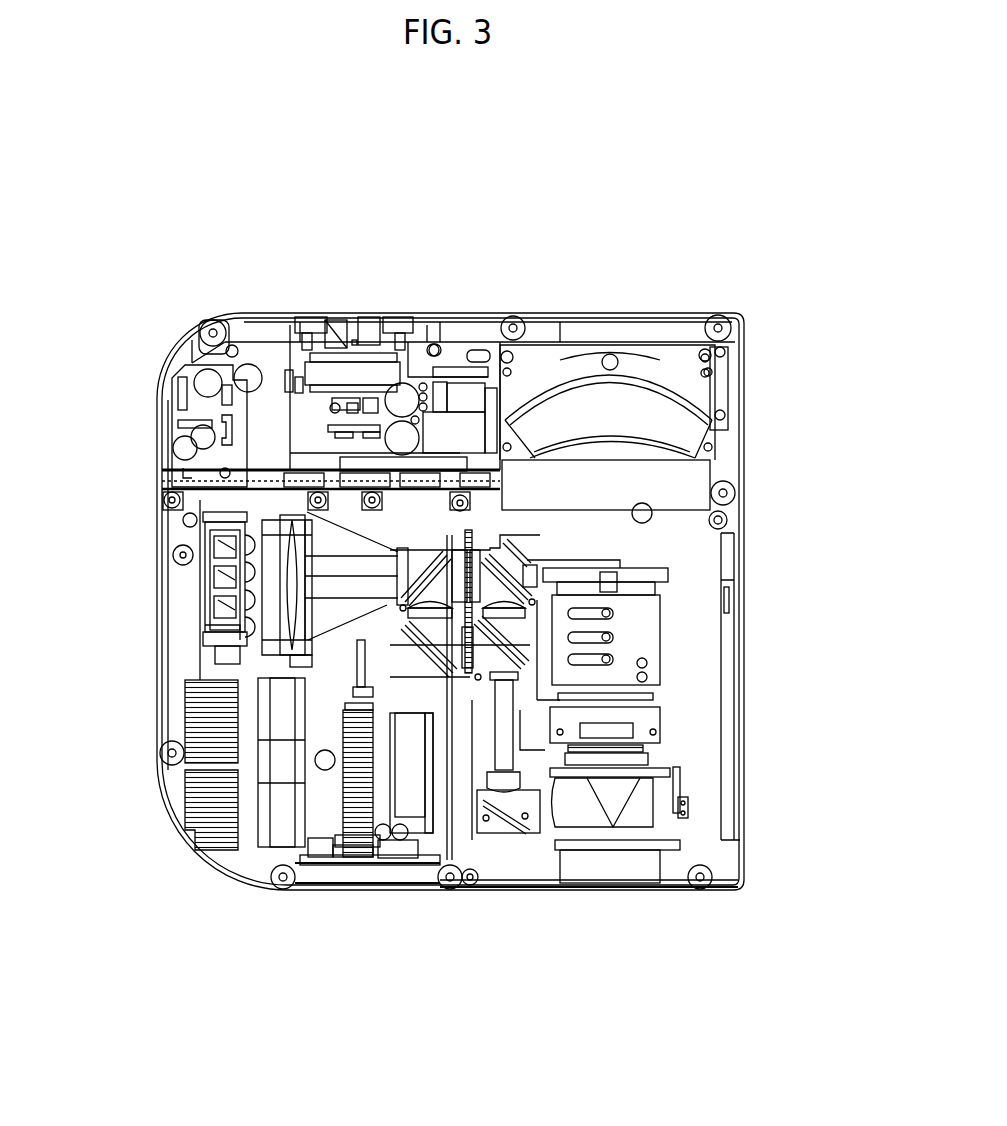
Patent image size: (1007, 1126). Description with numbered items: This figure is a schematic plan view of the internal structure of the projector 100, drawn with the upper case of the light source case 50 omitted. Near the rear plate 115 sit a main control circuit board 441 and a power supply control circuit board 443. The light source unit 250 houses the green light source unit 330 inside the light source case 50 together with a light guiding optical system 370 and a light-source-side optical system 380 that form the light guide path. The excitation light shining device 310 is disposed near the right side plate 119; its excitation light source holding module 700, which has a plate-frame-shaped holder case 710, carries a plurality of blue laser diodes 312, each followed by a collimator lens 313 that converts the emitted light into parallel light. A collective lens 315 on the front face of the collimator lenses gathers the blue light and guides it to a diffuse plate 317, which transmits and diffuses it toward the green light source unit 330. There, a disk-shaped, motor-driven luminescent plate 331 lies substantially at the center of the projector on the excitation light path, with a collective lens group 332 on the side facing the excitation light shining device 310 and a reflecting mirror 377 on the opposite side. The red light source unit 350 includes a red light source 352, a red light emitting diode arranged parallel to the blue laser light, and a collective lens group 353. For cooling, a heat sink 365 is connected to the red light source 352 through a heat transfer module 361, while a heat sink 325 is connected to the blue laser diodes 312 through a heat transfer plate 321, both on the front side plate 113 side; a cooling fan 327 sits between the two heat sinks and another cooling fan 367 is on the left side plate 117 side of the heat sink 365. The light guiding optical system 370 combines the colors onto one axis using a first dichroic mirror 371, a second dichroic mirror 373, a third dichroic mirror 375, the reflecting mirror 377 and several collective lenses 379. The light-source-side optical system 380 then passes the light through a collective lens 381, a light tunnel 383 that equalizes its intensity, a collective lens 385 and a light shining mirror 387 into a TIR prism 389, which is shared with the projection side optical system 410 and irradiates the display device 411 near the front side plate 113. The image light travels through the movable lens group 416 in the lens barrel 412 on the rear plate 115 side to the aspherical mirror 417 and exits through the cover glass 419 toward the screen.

The projector 100 is at (690, 232).
The front side plate 113 is at (587, 887).
The rear plate 115 is at (577, 315).
The left side plate 117 is at (744, 598).
The right side plate 119 is at (178, 470).
The light source unit 250 is at (297, 467).
The excitation light shining device 310 is at (230, 456).
The blue laser diodes 312 is at (190, 516).
The collimator lens 313 is at (212, 548).
The collective lens 315 is at (285, 505).
The diffuse plate 317 is at (392, 550).
The heat transfer plate 321 is at (210, 598).
The heat sink 325 is at (258, 690).
The cooling fan 327 is at (245, 720).
The green light source unit 330 is at (534, 452).
The luminescent plate 331 is at (472, 540).
The collective lens group 332 is at (455, 555).
The red light source unit 350 is at (251, 827).
The red light source 352 is at (245, 748).
The collective lens group 353 is at (250, 812).
The heat transfer module 361 is at (190, 680).
The heat sink 365 is at (335, 850).
The cooling fan 367 is at (428, 800).
The light guiding optical system 370 is at (557, 617).
The first dichroic mirror 371 is at (418, 600).
The second dichroic mirror 373 is at (360, 820).
The third dichroic mirror 375 is at (630, 696).
The reflecting mirror 377 is at (555, 575).
The collective lenses 379 is at (435, 947).
The light-source-side optical system 380 is at (658, 852).
The collective lens 381 is at (515, 682).
The light tunnel 383 is at (575, 768).
The collective lens 385 is at (548, 825).
The light shining mirror 387 is at (505, 838).
The TIR prism 389 is at (625, 830).
The projection side optical system 410 is at (502, 637).
The display device 411 is at (612, 840).
The lens barrel 412 is at (648, 622).
The movable lens group 416 is at (627, 637).
The aspherical mirror 417 is at (653, 415).
The cover glass 419 is at (667, 477).
The main control circuit board 441 is at (300, 468).
The power supply control circuit board 443 is at (280, 365).
The light source case 50 is at (440, 790).
The excitation light source holding module 700 is at (190, 612).
The holder case 710 is at (205, 620).